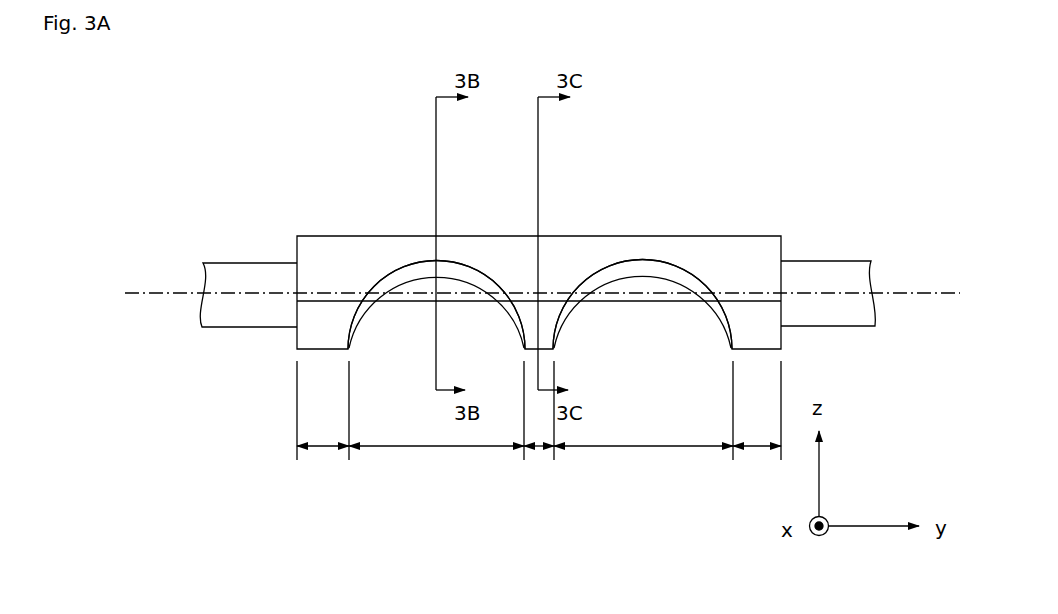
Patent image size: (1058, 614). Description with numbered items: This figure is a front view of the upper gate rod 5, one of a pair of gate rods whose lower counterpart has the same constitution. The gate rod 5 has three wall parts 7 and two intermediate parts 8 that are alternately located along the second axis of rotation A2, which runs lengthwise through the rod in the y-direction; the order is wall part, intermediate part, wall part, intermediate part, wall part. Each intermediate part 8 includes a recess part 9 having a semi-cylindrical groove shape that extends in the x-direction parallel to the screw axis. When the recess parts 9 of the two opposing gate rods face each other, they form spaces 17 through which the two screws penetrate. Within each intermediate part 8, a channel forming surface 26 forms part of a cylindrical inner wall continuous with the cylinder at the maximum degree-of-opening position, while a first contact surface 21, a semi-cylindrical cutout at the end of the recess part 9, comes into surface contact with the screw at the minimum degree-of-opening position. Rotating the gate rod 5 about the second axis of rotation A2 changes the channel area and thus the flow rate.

The gate rod 5 is at (708, 163).
The wall part 7 is at (539, 427).
The intermediate part 8 is at (541, 469).
The recess part 9 is at (488, 287).
The space 17 is at (426, 331).
The first contact surface 21 is at (401, 272).
The channel forming surface 26 is at (634, 273).
The second axis of rotation A2 is at (542, 275).